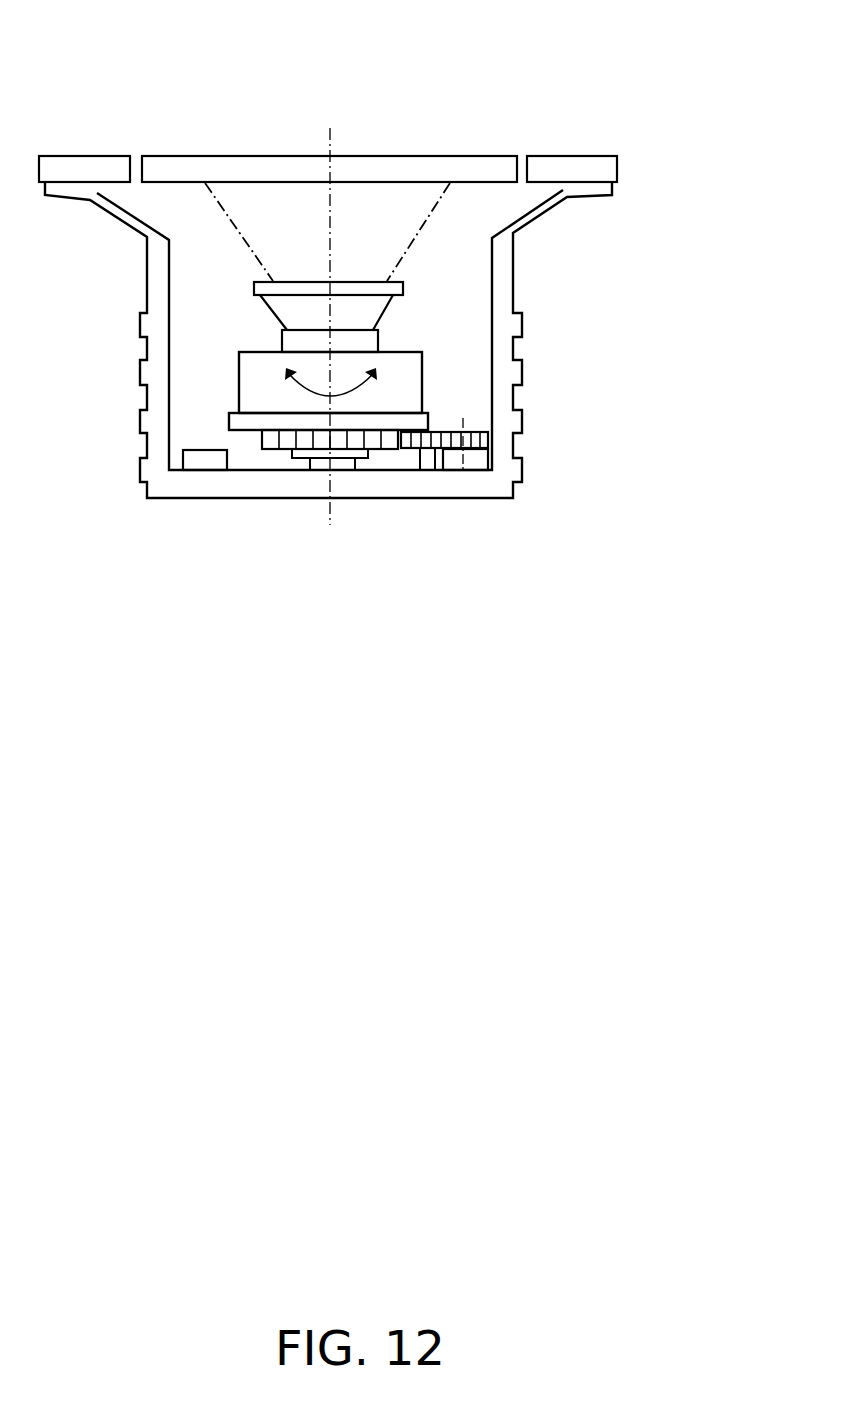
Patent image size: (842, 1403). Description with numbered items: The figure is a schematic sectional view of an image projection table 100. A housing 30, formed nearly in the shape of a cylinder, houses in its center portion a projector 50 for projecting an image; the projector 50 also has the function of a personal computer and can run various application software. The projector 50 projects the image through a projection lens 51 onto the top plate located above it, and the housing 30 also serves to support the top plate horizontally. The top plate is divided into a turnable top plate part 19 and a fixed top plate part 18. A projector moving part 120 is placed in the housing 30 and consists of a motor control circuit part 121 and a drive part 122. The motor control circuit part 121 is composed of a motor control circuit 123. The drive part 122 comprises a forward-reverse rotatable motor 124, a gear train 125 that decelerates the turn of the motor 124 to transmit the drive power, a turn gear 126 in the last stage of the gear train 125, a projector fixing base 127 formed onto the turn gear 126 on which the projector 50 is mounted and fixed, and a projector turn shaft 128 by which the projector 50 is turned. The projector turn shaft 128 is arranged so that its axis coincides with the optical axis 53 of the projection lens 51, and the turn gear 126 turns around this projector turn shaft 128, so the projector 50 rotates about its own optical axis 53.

The projector 100 is at (543, 48).
The fixed top plate part 18 is at (470, 153).
The turnable top plate part 19 is at (60, 153).
The housing 30 is at (502, 273).
The projector 50 is at (430, 293).
The projection lens 51 is at (367, 313).
The optical axis 53 is at (331, 218).
The projector moving part 120 is at (257, 650).
The motor control circuit part 121 is at (183, 582).
The drive part 122 is at (315, 621).
The motor control circuit 123 is at (195, 463).
The forward-reverse rotatable motor 124 is at (477, 463).
The gear train 125 is at (433, 453).
The turn gear 126 is at (390, 449).
The projector fixing base 127 is at (245, 422).
The projector turn shaft 128 is at (320, 463).